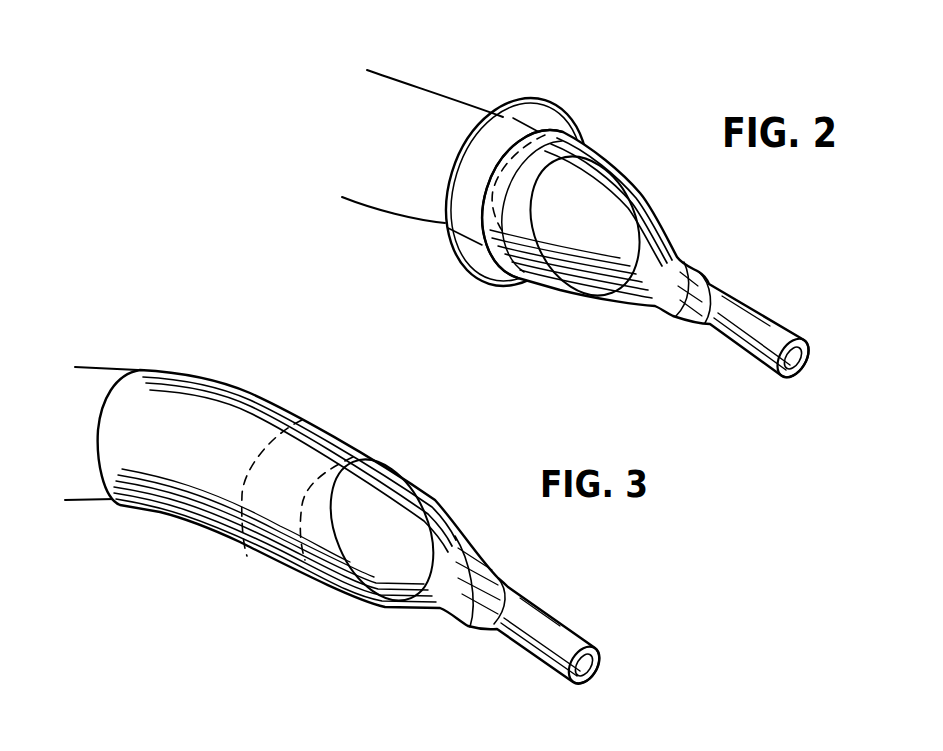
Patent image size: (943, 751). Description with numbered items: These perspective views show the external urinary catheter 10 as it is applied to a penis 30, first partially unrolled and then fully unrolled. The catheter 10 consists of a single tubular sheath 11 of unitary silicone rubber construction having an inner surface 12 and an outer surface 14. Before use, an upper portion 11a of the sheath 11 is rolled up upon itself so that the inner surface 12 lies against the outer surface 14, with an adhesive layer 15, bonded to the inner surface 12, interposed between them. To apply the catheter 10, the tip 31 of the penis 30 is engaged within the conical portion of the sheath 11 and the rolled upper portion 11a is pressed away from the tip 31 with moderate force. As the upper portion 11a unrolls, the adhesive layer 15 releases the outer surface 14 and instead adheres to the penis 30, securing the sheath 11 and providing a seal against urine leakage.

In FIG. 2, the external urinary catheter 10 is at (670, 190).
In FIG. 3, the external urinary catheter 10 is at (339, 399).
In FIG. 2, the tubular sheath 11 is at (608, 152).
In FIG. 3, the tubular sheath 11 is at (233, 378).
In FIG. 2, the upper portion 11a is at (82, 0).
In FIG. 2, the inner surface 12 is at (532, 100).
In FIG. 2, the outer surface 14 is at (530, 287).
In FIG. 3, the outer surface 14 is at (177, 518).
In FIG. 2, the adhesive layer 15 is at (492, 190).
In FIG. 3, the adhesive layer 15 is at (220, 545).
In FIG. 2, the penis 30 is at (372, 212).
In FIG. 3, the penis 30 is at (105, 360).
In FIG. 2, the tip 31 is at (665, 236).
In FIG. 3, the tip 31 is at (453, 537).